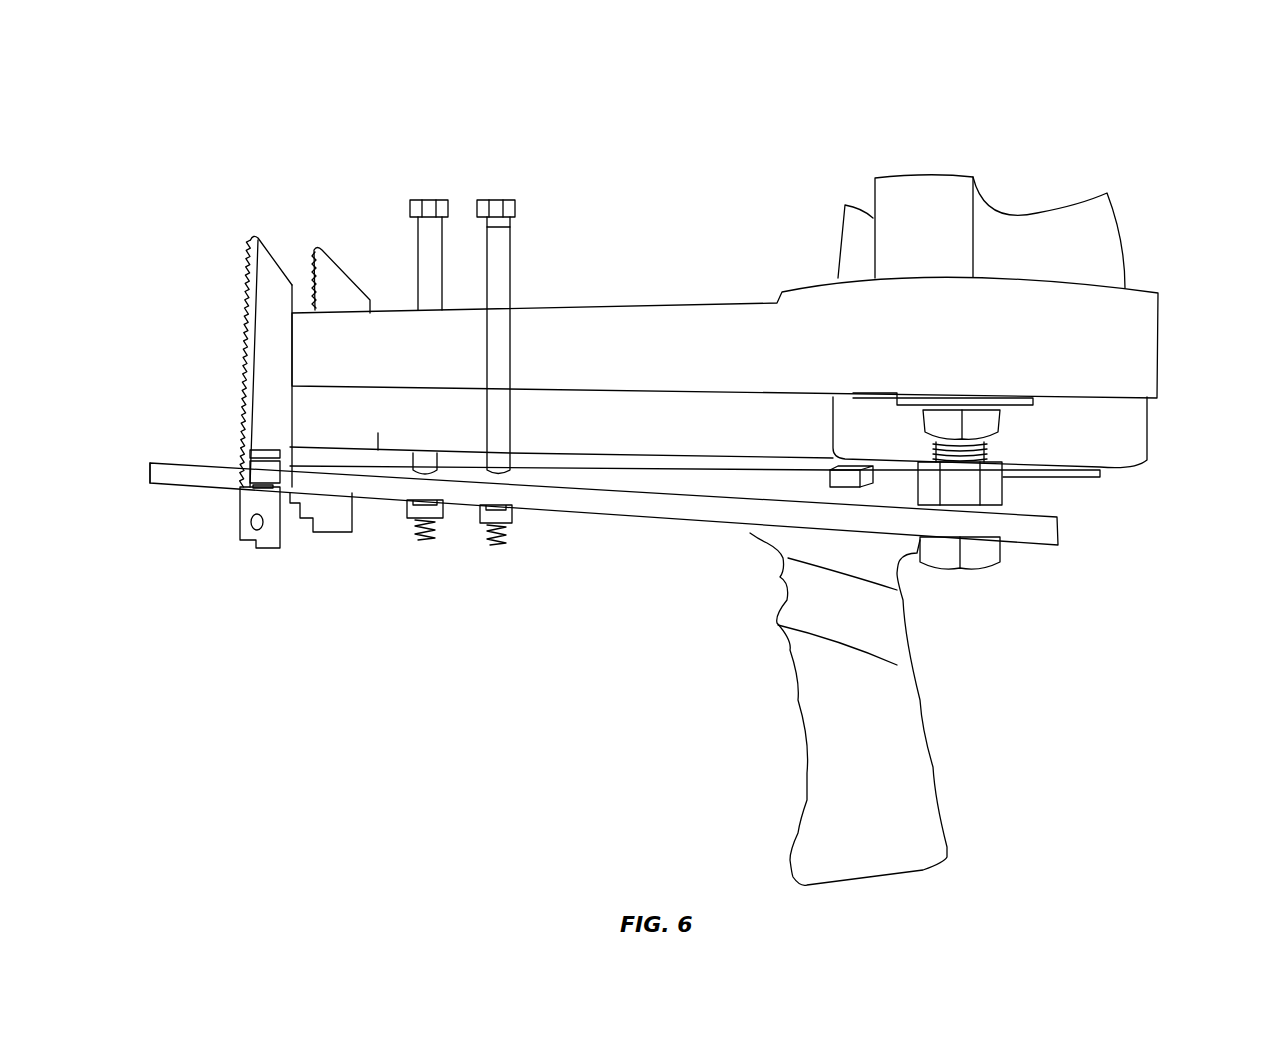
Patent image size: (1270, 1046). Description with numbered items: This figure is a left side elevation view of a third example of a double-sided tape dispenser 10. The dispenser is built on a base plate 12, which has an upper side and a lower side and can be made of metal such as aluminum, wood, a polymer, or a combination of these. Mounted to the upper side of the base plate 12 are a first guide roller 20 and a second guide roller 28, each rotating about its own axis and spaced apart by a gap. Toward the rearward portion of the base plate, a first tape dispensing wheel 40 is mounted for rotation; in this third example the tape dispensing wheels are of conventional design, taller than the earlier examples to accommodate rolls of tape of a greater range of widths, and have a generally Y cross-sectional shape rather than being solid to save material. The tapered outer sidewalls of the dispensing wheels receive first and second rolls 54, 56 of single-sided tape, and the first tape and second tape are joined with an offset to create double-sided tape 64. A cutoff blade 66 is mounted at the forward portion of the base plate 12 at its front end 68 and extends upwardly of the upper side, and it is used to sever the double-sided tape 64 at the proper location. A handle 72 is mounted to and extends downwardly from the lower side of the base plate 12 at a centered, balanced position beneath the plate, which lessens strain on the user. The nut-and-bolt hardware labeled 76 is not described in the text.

The tape dispenser 10 is at (1090, 138).
The base plate 12 is at (1062, 530).
The first guide roller 20 is at (437, 245).
The second guide roller 28 is at (500, 250).
The first tape dispensing wheel 40 is at (1097, 227).
The first roll of single-sided tape 54 is at (1133, 337).
The second roll of single-sided tape 56 is at (1127, 430).
The double-sided tape 64 is at (378, 433).
The cutoff blade 66 is at (333, 288).
The front end 68 is at (183, 477).
The handle 72 is at (912, 757).
The nut assembly 76 is at (990, 422).